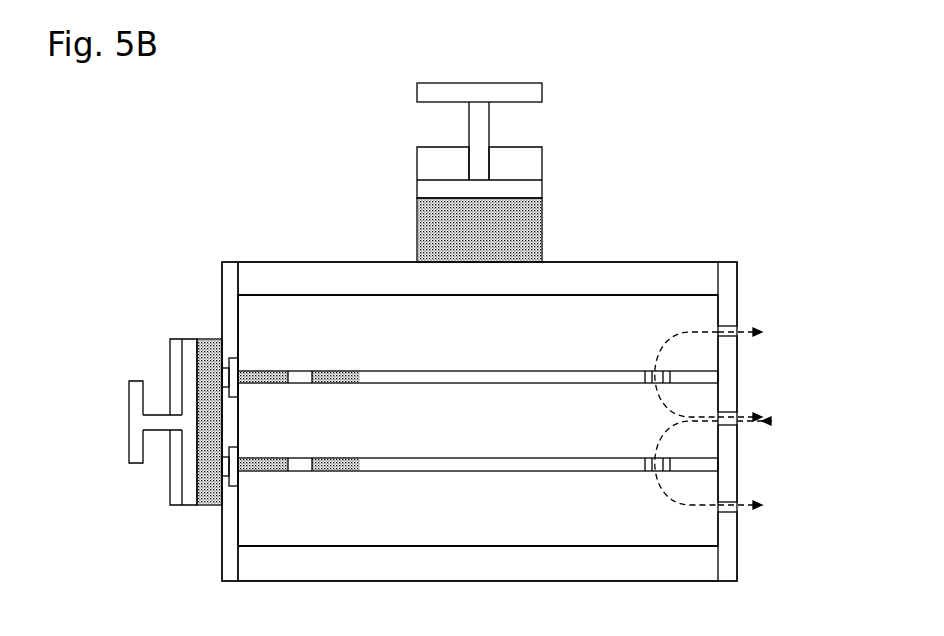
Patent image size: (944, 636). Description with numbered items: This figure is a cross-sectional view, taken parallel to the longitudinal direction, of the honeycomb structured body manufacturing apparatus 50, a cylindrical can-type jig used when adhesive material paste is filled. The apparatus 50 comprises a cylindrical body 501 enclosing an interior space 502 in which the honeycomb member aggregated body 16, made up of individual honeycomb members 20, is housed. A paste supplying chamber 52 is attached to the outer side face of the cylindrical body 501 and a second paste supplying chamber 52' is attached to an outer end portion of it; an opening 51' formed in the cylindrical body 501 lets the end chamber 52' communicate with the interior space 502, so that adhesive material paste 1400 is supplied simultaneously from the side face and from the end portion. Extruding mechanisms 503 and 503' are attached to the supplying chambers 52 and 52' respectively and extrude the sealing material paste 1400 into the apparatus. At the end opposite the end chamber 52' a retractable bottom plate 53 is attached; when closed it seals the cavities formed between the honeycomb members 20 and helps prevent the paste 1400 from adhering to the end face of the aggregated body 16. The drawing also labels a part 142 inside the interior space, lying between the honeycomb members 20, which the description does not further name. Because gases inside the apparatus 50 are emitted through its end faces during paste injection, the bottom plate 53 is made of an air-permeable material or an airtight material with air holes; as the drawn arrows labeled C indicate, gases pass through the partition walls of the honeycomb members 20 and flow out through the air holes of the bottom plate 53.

The honeycomb structured body manufacturing apparatus 50 is at (692, 246).
The honeycomb member 20 is at (300, 318).
The cylindrical body 501 is at (598, 277).
The interior space 502 is at (700, 548).
The extruding mechanism 503 is at (494, 102).
The paste supplying chamber 52 is at (519, 163).
The retractable bottom plate 53 is at (728, 285).
The electrode 142 is at (665, 384).
The adhesive material paste 1400 is at (423, 235).
The paste supplying chamber 52' is at (159, 381).
The extruding mechanism 503' is at (112, 424).
The opening 51' is at (210, 374).
The honeycomb member aggregated body 16 is at (216, 537).